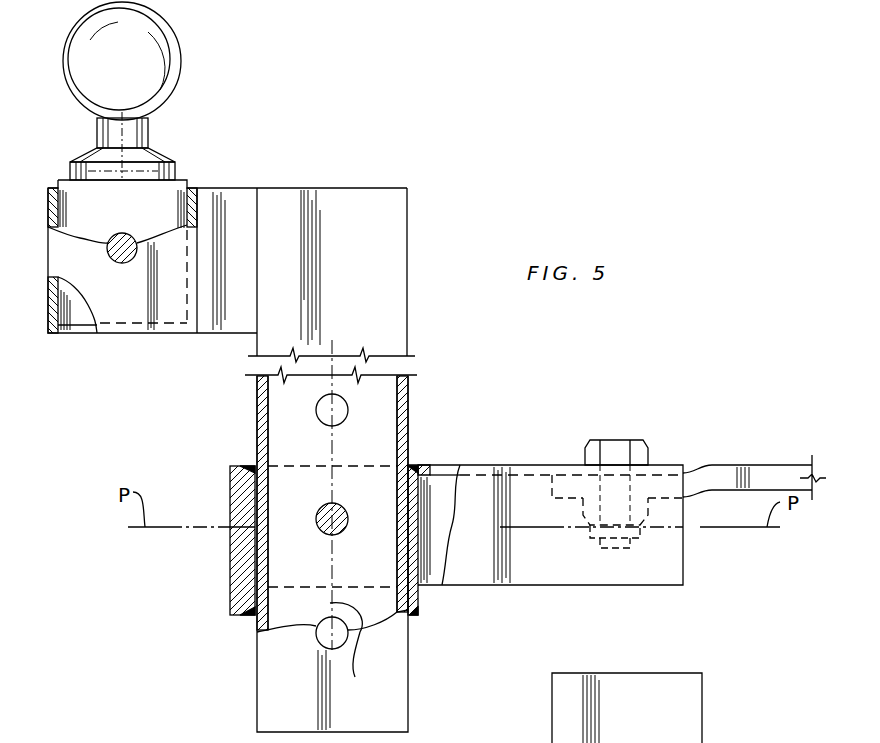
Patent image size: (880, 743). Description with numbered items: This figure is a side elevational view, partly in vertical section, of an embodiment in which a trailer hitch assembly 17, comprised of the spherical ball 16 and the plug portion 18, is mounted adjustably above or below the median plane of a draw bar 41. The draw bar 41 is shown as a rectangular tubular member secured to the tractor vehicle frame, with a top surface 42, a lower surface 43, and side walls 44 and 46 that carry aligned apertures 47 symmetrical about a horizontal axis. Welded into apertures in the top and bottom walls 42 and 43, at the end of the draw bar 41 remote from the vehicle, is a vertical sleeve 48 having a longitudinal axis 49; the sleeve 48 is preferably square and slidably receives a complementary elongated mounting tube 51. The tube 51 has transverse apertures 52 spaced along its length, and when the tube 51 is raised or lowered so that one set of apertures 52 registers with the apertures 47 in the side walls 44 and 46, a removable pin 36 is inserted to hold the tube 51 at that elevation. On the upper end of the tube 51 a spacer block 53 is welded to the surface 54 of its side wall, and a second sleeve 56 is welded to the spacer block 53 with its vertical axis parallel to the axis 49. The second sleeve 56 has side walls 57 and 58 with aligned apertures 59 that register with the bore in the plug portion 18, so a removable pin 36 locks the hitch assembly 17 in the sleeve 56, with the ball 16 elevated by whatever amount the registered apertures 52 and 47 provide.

The spherical ball 16 is at (167, 58).
The trailer hitch assembly 17 is at (170, 136).
The plug portion 18 is at (177, 193).
The removable pin 36 is at (118, 233).
The draw bar 41 is at (500, 458).
The top surface 42 is at (460, 465).
The lower surface 43 is at (462, 585).
The side wall 44 is at (440, 480).
The side wall 46 is at (483, 541).
The apertures 47 is at (345, 510).
The sleeve 48 is at (238, 553).
The longitudinal axis 49 is at (353, 649).
The mounting tube 51 is at (261, 406).
The apertures 52 is at (336, 415).
The spacer block 53 is at (245, 207).
The surface 54 is at (252, 340).
The second sleeve 56 is at (47, 202).
The side wall 57 is at (85, 333).
The side wall 58 is at (92, 272).
The apertures 59 is at (115, 263).